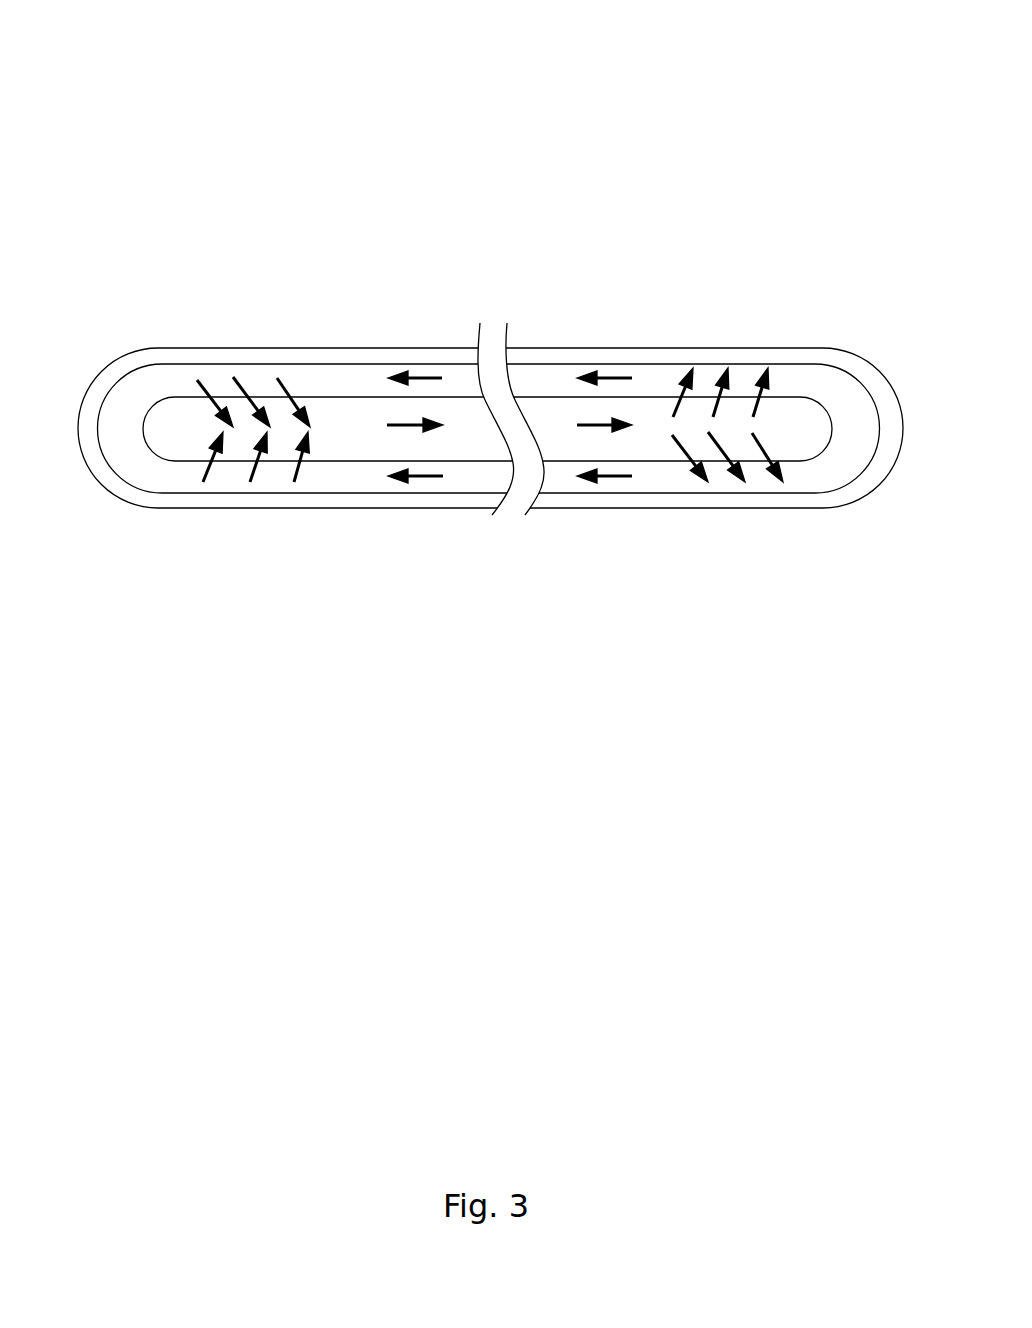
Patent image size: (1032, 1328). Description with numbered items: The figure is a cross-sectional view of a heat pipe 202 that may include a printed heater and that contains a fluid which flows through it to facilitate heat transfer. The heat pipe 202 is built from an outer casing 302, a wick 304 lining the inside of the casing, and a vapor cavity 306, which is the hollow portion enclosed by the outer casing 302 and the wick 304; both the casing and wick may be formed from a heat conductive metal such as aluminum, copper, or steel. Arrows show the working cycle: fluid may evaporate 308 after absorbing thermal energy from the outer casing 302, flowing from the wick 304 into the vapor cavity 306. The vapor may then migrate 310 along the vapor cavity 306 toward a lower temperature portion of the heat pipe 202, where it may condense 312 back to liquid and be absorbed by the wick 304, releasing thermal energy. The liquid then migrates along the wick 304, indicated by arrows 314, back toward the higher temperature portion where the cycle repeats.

The heat pipe 202 is at (509, 74).
The outer casing 302 is at (235, 357).
The wick 304 is at (807, 380).
The vapor cavity 306 is at (337, 430).
The evaporate 308 is at (207, 472).
The migrate 310 is at (400, 423).
The condense 312 is at (680, 450).
The outer channel return flow direction 314 is at (617, 378).